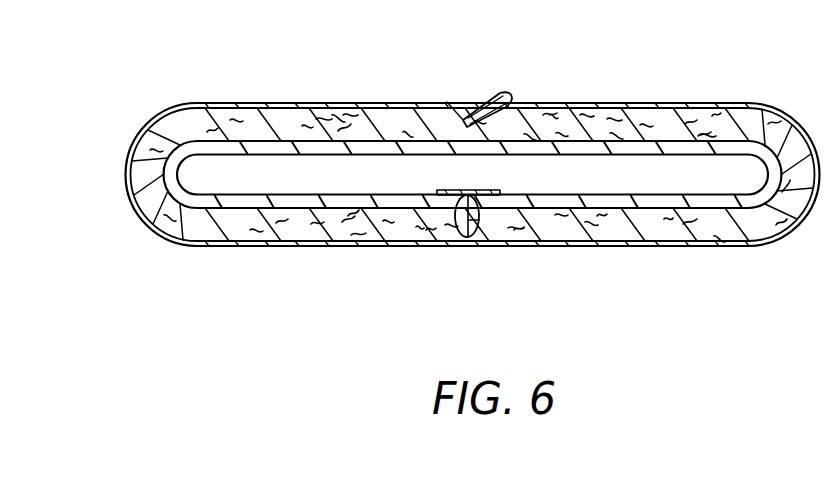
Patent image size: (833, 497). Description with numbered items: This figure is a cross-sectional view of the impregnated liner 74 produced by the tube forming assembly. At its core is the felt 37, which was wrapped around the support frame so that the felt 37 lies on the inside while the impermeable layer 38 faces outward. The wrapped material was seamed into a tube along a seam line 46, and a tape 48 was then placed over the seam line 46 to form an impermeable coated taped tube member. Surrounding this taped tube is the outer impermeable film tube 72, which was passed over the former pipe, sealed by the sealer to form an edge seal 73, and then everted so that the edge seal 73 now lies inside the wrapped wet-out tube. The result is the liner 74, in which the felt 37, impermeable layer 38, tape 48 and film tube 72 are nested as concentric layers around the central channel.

The felt 37 is at (164, 236).
The impermeable layer 38 is at (310, 188).
The seam line 46 is at (483, 208).
The tape 48 is at (447, 193).
The film tube 72 is at (212, 103).
The edge seal 73 is at (497, 91).
The liner 74 is at (767, 85).